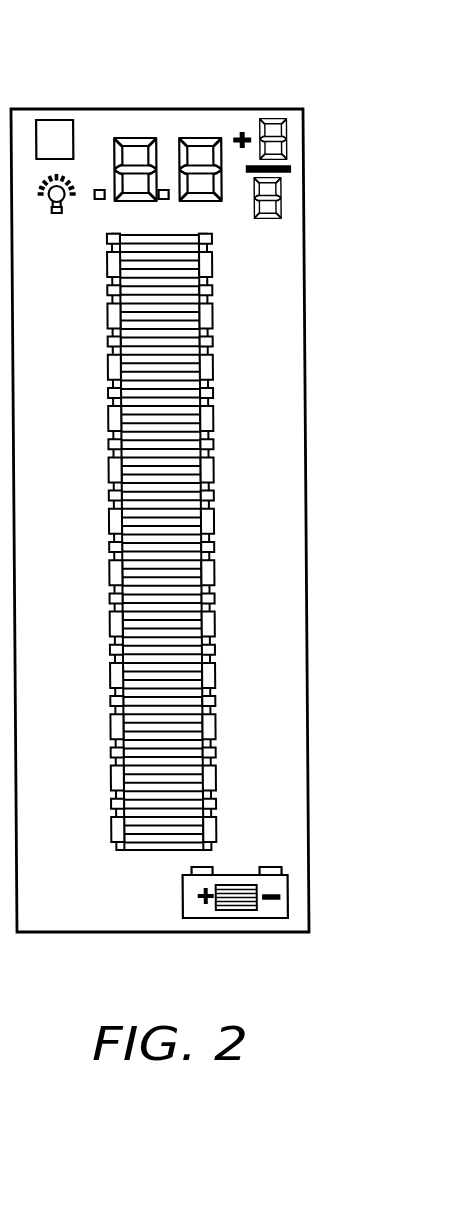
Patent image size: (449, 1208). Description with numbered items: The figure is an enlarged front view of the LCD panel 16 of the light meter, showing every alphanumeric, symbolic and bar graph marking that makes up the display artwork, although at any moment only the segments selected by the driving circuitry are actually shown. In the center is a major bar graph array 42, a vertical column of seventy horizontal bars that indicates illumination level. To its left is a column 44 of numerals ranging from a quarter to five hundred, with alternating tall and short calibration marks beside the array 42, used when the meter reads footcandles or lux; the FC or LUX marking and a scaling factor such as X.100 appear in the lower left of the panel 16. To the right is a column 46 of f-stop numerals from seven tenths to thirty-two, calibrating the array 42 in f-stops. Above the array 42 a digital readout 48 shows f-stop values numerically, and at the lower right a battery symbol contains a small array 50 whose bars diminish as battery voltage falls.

The LCD panel 16 is at (37, 56).
The central major bar graph array 42 is at (155, 828).
The column of numerals 44 is at (76, 238).
The column of f-stop numerals 46 is at (287, 236).
The digital readout 48 is at (170, 117).
The battery condition array 50 is at (266, 907).